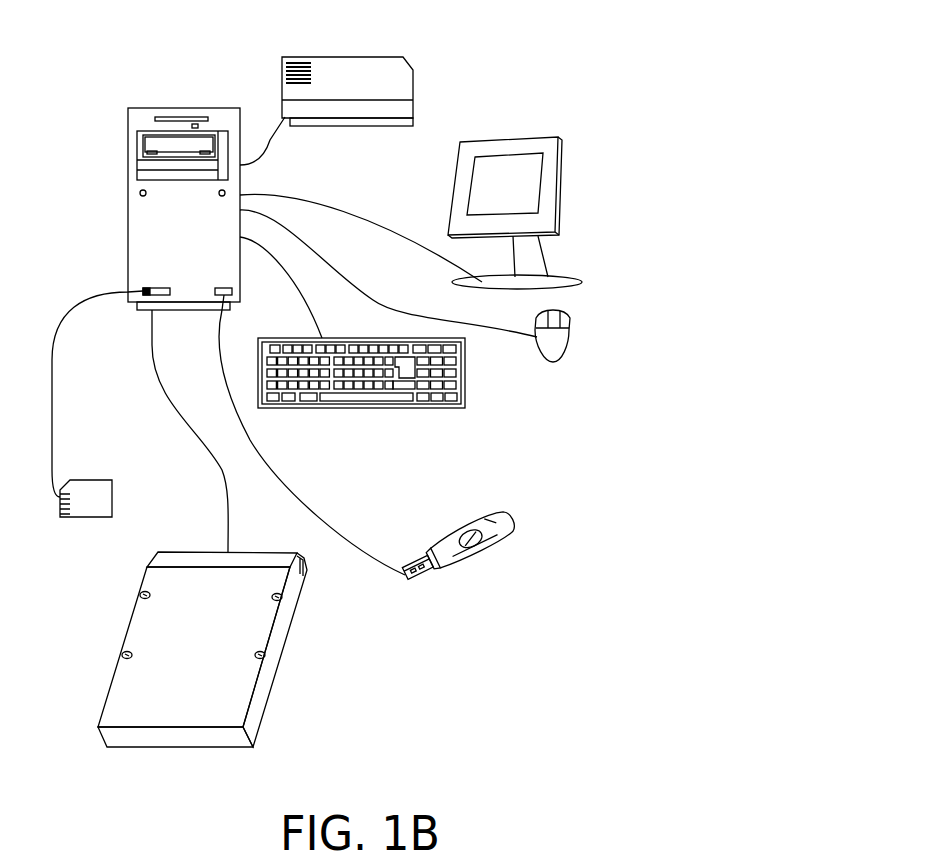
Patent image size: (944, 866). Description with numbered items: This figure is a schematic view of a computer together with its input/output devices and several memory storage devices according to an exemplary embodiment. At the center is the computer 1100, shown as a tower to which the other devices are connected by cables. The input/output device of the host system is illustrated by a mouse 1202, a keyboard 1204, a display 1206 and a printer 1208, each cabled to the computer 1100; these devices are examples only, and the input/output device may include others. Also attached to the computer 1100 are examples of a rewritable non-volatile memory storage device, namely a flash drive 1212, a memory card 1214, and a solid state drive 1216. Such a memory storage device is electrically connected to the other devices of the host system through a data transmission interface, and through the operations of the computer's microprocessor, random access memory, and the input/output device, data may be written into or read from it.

The computer 1100 is at (188, 108).
The mouse 1202 is at (572, 342).
The keyboard 1204 is at (466, 383).
The display 1206 is at (520, 135).
The printer 1208 is at (343, 57).
The flash drive 1212 is at (457, 537).
The memory card 1214 is at (112, 487).
The solid state drive 1216 is at (253, 542).